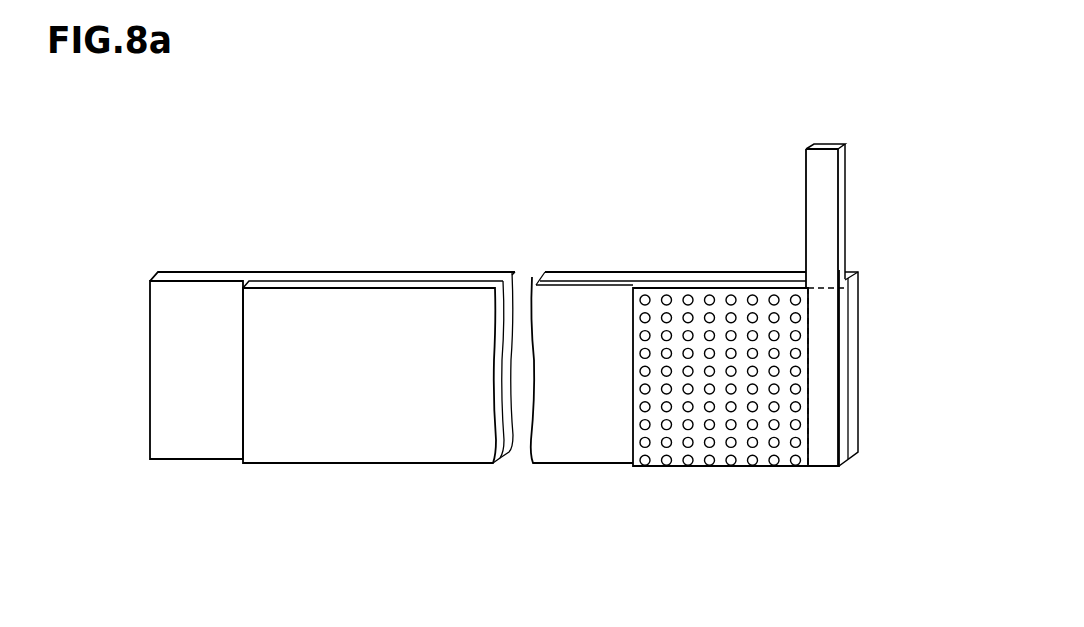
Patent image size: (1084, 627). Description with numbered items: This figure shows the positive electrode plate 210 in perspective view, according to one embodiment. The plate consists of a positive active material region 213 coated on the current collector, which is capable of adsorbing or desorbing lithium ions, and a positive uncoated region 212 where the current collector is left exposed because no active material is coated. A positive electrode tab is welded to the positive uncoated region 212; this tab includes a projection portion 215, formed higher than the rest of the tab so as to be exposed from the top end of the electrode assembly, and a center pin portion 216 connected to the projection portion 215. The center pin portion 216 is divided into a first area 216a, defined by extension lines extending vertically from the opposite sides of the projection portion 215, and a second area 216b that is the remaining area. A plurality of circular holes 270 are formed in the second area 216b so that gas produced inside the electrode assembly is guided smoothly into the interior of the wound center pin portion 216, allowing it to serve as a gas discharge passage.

The positive electrode plate 210 is at (137, 166).
The positive uncoated region 212 is at (191, 449).
The positive active material region 213 is at (367, 454).
The projection portion 215 is at (827, 197).
The center pin portion 216 is at (745, 425).
The first area 216a is at (825, 454).
The second area 216b is at (745, 454).
The holes 270 is at (688, 457).